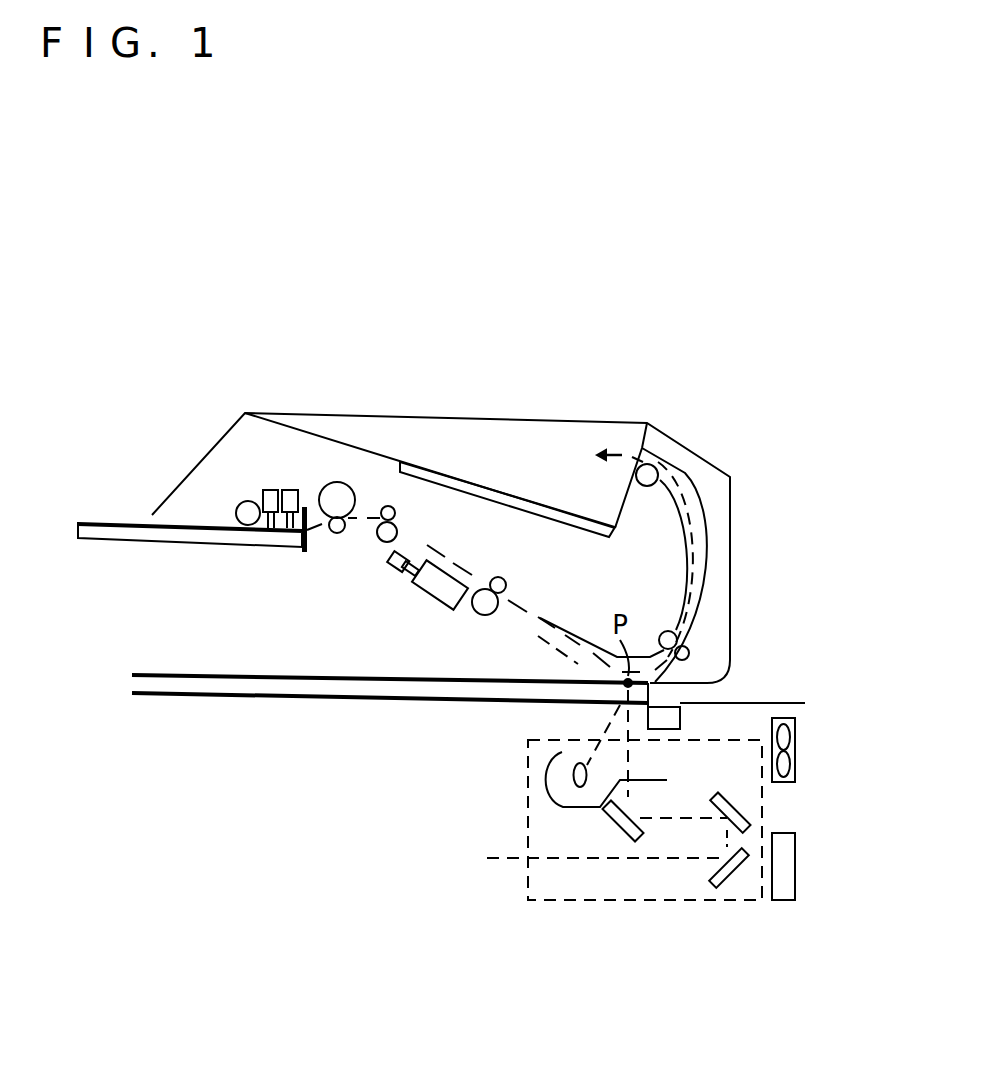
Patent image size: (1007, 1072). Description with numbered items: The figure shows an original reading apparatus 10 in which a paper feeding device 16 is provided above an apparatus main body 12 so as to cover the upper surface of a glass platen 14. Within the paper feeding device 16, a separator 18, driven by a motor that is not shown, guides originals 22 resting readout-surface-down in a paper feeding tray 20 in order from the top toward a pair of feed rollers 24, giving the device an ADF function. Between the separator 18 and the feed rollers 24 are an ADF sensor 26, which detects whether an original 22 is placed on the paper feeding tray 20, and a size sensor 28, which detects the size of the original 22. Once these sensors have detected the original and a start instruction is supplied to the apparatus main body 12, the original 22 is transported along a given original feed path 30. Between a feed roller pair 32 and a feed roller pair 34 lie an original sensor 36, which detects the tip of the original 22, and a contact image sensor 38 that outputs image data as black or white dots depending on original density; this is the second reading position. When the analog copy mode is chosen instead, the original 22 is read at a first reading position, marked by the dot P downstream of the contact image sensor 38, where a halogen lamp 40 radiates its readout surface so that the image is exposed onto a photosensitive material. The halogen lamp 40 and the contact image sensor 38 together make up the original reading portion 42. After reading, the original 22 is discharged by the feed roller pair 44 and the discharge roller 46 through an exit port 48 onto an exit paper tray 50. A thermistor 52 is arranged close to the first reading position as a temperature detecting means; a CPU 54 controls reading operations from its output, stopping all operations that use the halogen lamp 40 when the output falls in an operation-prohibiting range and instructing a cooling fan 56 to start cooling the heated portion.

The original reading apparatus 10 is at (726, 348).
The apparatus main body 12 is at (773, 695).
The glass platen 14 is at (351, 698).
The paper feeding device 16 is at (482, 412).
The separator 18 is at (242, 501).
The paper feeding tray 20 is at (210, 540).
The original 22 is at (143, 522).
The pair of feed rollers 24 is at (337, 533).
The ADF sensor 26 is at (270, 489).
The size sensor 28 is at (295, 489).
The original feed path 30 is at (538, 617).
The feed roller pair 32 is at (380, 541).
The feed roller pair 34 is at (482, 616).
The original sensor 36 is at (395, 576).
The contact image sensor 38 is at (435, 597).
The halogen lamp 40 is at (578, 788).
The original reading portion 42 is at (568, 902).
The feed roller pair 44 is at (665, 630).
The discharge roller 46 is at (648, 487).
The exit port 48 is at (633, 438).
The exit paper tray 50 is at (523, 500).
The thermistor 52 is at (681, 718).
The CPU 54 is at (797, 858).
The cooling fan 56 is at (797, 742).